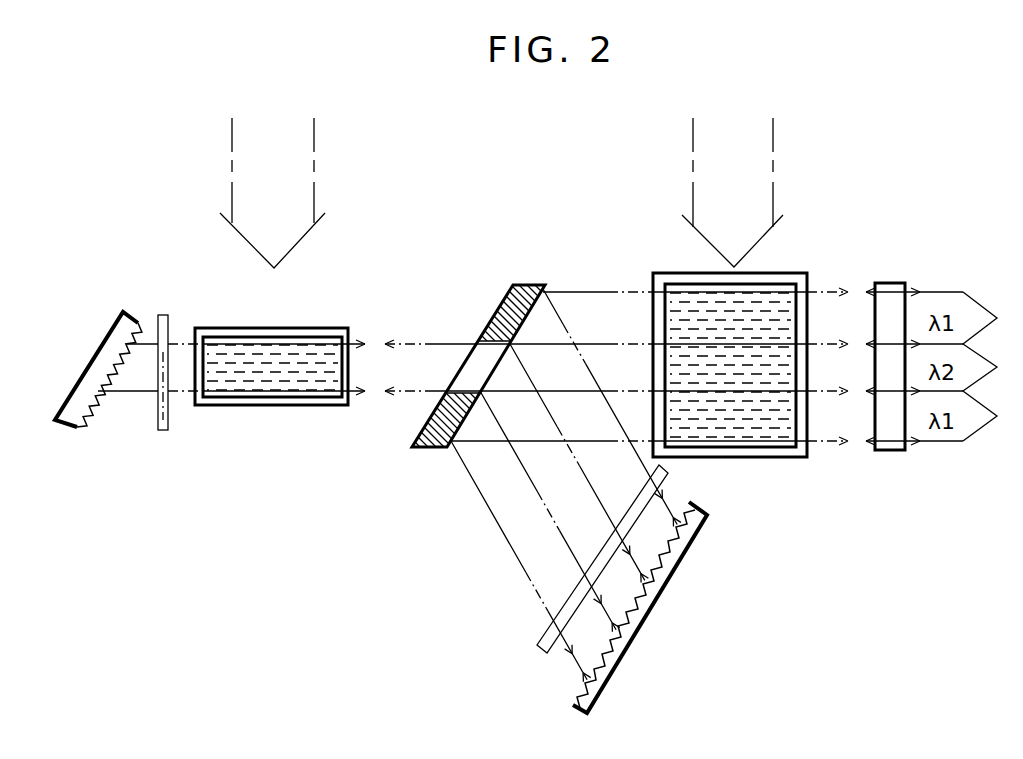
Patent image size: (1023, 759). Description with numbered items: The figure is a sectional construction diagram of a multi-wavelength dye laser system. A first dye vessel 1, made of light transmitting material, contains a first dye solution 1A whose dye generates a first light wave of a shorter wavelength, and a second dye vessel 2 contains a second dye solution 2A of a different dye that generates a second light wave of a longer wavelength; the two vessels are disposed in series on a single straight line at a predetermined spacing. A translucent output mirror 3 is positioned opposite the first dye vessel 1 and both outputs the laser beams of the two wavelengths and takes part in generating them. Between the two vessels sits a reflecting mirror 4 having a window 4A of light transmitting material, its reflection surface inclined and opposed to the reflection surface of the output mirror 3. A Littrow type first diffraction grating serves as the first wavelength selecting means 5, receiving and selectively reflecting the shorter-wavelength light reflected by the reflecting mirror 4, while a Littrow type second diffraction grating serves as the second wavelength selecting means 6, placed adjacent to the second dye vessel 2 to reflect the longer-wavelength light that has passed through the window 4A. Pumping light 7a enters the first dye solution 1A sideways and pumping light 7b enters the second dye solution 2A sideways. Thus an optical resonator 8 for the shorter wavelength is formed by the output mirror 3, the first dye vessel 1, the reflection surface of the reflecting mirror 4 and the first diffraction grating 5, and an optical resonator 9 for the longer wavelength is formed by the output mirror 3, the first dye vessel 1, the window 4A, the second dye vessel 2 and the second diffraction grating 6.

The first dye vessel 1 is at (747, 449).
The first dye solution 1A is at (778, 431).
The second dye vessel 2 is at (250, 401).
The second dye solution 2A is at (308, 383).
The output mirror 3 is at (889, 452).
The reflecting mirror 4 is at (432, 448).
The window 4A is at (475, 370).
The first wavelength selecting means 5 is at (638, 617).
The second wavelength selecting means 6 is at (70, 421).
The pumping light 7a is at (729, 133).
The pumping light 7b is at (273, 133).
The optical resonator 8 is at (843, 569).
The optical resonator 9 is at (264, 528).